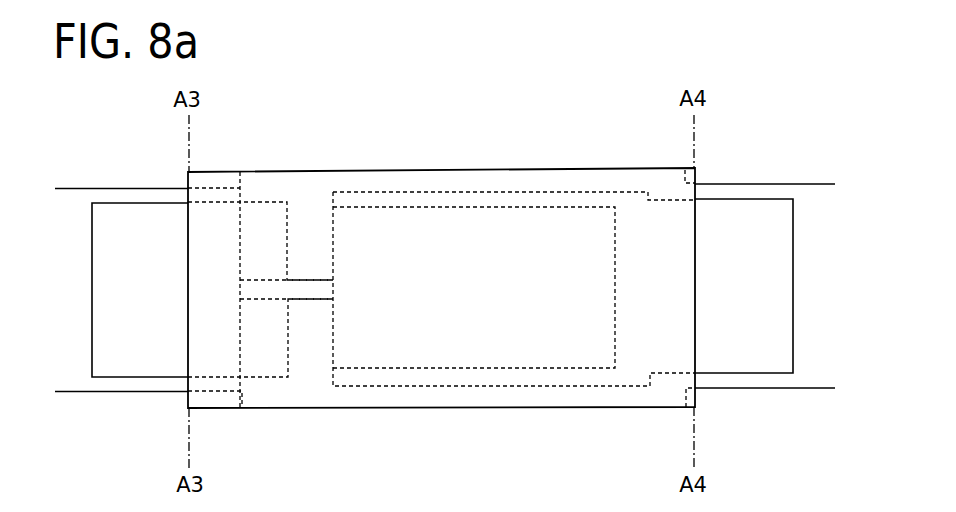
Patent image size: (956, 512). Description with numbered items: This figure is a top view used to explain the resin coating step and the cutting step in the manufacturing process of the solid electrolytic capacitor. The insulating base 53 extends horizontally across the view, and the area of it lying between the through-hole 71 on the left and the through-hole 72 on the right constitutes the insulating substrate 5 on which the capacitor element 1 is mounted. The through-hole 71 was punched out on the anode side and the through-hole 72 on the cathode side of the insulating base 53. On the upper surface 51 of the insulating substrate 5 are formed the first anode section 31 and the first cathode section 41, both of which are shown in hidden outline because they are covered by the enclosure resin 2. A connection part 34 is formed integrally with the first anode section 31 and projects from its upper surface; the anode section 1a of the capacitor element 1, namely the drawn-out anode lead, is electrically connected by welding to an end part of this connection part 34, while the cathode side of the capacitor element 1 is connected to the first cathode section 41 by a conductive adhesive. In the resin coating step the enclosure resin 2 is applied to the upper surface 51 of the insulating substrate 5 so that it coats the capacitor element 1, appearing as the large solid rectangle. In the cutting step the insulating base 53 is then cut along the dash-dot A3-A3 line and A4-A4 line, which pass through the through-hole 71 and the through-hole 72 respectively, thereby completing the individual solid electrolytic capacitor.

The capacitor element 1 is at (501, 225).
The anode section 1a is at (267, 292).
The enclosure resin 2 is at (638, 168).
The insulating substrate 5 is at (389, 178).
The first anode section 31 is at (225, 215).
The connection part 34 is at (263, 215).
The first cathode section 41 is at (568, 202).
The upper surface 51 is at (312, 215).
The insulating base 53 is at (113, 392).
The through-hole 71 is at (151, 226).
The through-hole 72 is at (759, 222).